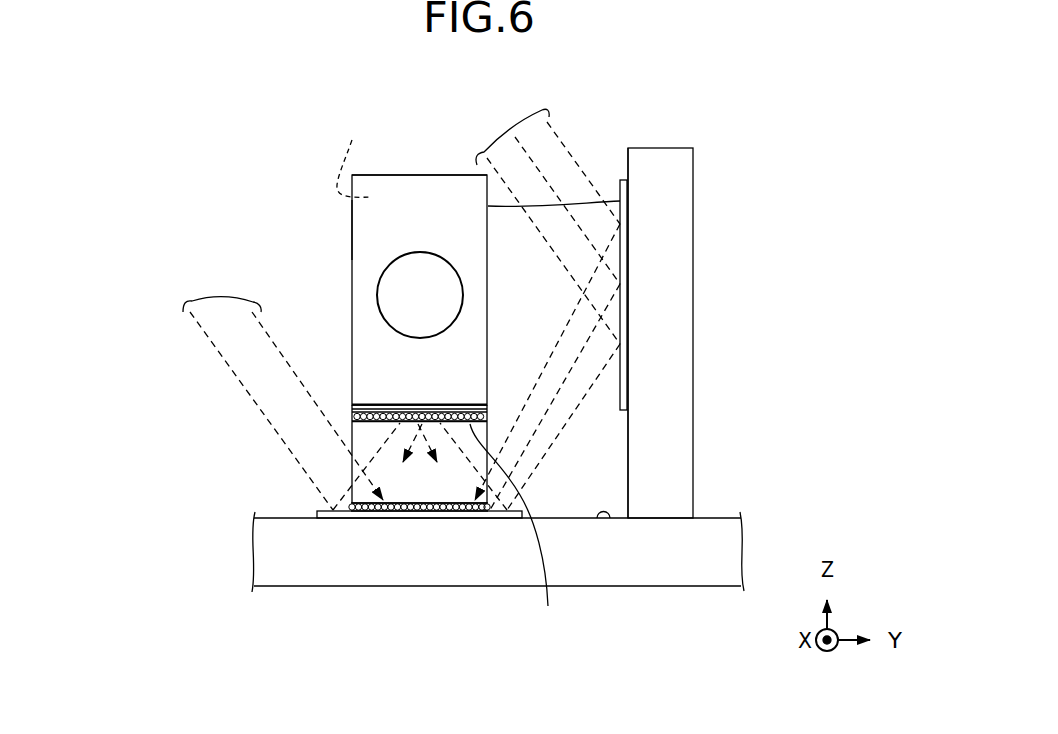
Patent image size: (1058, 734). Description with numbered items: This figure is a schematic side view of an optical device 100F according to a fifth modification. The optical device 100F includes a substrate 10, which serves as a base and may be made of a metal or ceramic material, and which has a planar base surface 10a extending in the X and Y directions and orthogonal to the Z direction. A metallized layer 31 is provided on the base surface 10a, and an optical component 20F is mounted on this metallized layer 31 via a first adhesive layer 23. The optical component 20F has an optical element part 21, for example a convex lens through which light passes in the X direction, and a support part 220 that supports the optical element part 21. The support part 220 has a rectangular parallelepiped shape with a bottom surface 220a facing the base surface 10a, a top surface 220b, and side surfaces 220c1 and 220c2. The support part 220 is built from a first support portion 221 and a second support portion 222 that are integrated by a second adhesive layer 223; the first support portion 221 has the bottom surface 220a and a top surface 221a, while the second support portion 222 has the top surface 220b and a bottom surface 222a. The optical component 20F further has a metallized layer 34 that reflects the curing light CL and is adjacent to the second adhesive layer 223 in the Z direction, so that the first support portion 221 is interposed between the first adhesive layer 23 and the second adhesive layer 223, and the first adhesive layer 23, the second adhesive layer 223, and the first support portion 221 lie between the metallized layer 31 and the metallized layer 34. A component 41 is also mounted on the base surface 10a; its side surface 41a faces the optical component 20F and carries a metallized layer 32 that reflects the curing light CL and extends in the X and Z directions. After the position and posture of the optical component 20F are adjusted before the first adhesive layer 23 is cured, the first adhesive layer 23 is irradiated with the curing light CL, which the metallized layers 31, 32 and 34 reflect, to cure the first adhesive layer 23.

The optical device 100F is at (114, 158).
The optical component 20F is at (115, 375).
The optical element part 21 is at (387, 302).
The support part 220 is at (182, 403).
The second support portion 222 is at (362, 362).
The second adhesive layer 223 is at (354, 414).
The first support portion 221 is at (354, 441).
The top surface 221a is at (493, 407).
The bottom surface 222a is at (470, 424).
The bottom surface 220a is at (440, 511).
The top surface 220b is at (432, 175).
The side surface 220c1 is at (378, 187).
The side surface 220c2 is at (352, 232).
The substrate 10 is at (756, 541).
The base surface 10a is at (604, 518).
The component 41 is at (700, 167).
The side surface 41a is at (627, 160).
The metallized layer 32 is at (626, 282).
The metallized layer 31 is at (323, 518).
The first adhesive layer 23 is at (368, 511).
The metallized layer 34 is at (514, 528).
The curing light CL is at (200, 300).